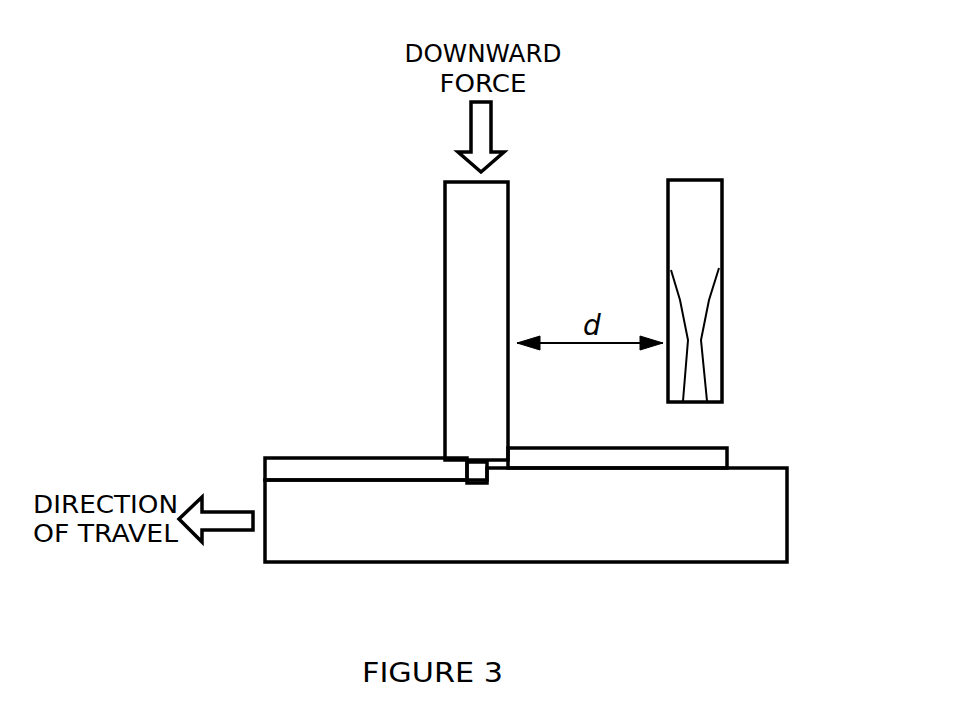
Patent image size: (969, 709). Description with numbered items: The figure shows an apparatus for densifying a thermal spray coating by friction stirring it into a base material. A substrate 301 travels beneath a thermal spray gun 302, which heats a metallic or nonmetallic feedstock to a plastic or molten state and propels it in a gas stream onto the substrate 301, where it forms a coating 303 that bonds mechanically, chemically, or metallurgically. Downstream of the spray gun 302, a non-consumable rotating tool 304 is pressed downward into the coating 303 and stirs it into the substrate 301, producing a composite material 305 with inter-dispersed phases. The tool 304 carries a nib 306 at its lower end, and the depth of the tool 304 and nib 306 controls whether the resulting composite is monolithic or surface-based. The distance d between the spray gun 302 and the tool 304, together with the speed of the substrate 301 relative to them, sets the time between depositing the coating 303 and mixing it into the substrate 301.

The substrate 301 is at (787, 503).
The thermal spray gun 302 is at (722, 205).
The coating 303 is at (722, 448).
The non-consumable rotating tool 304 is at (445, 250).
The composite material 305 is at (393, 457).
The nib 306 is at (487, 483).